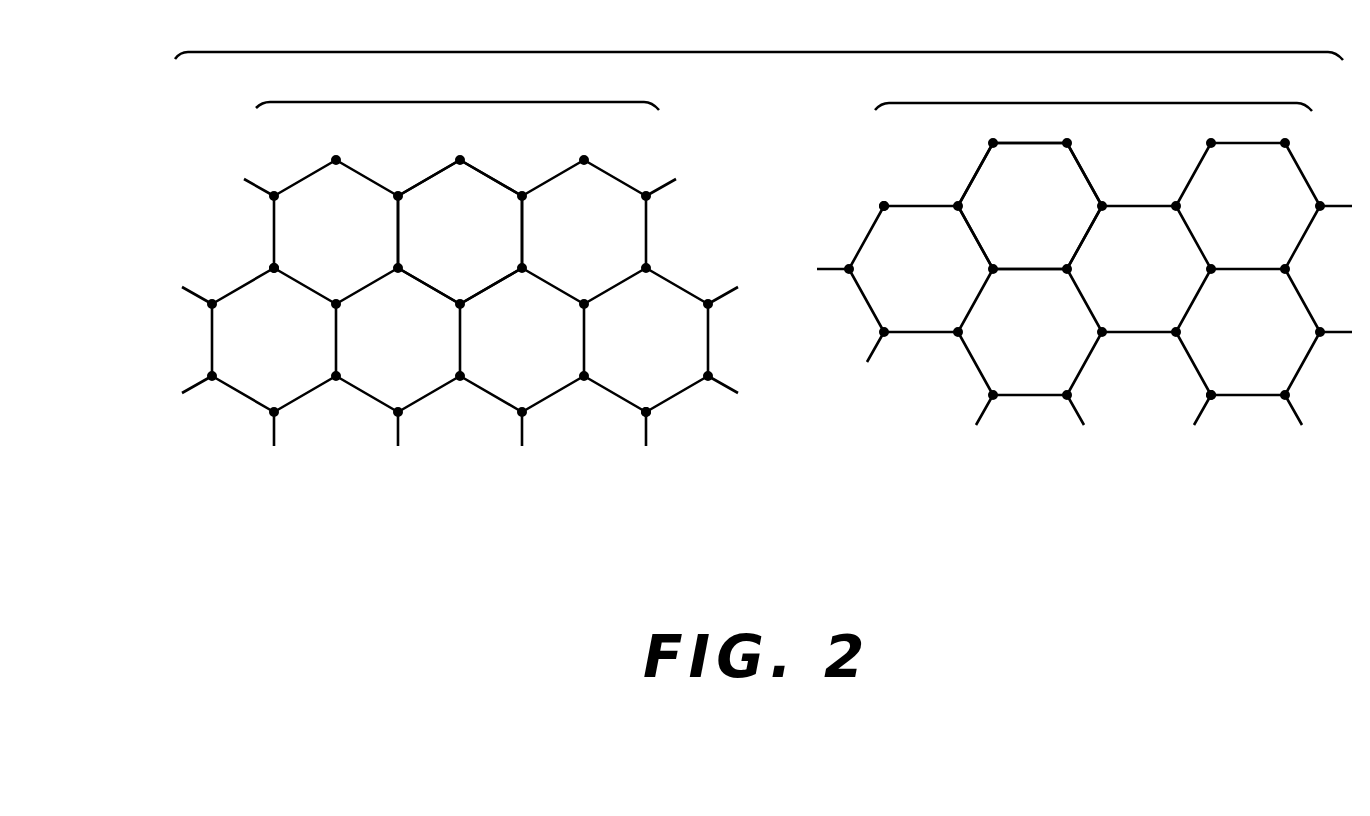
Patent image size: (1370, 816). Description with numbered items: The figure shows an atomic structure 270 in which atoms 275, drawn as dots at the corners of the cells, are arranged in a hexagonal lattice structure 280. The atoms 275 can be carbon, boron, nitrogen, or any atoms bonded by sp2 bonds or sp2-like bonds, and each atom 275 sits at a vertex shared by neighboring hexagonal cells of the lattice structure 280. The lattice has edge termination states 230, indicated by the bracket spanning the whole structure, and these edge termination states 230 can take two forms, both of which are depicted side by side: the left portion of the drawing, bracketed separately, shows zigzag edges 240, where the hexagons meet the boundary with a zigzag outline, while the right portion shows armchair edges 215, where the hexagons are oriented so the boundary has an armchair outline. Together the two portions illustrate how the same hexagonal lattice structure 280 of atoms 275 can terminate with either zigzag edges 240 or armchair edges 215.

The edge termination states 230 is at (759, 38).
The zigzag edges 240 is at (460, 256).
The armchair edges 215 is at (1084, 246).
The hexagonal lattice structure 280 is at (487, 244).
The atoms 275 is at (1224, 420).
The atomic structure 270 is at (791, 552).